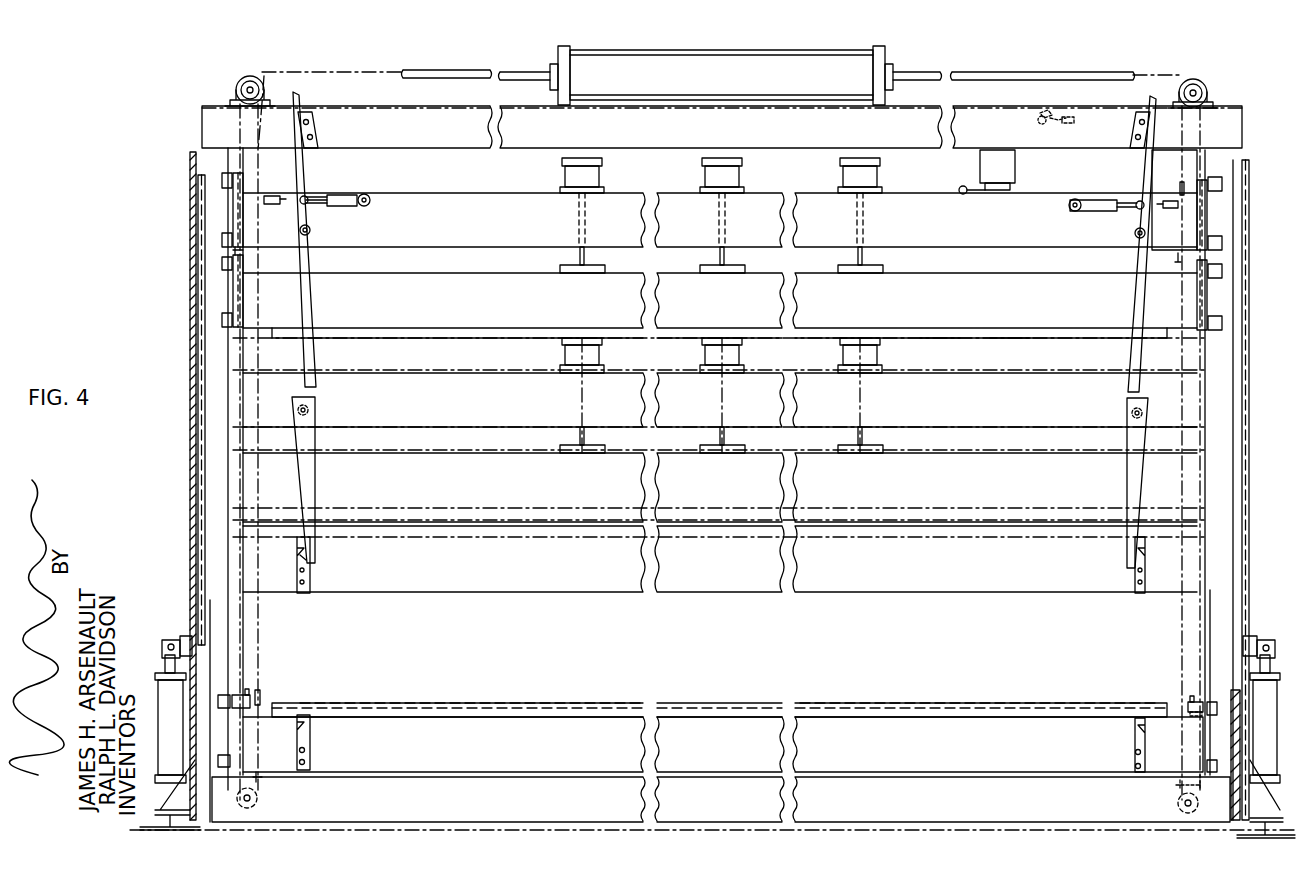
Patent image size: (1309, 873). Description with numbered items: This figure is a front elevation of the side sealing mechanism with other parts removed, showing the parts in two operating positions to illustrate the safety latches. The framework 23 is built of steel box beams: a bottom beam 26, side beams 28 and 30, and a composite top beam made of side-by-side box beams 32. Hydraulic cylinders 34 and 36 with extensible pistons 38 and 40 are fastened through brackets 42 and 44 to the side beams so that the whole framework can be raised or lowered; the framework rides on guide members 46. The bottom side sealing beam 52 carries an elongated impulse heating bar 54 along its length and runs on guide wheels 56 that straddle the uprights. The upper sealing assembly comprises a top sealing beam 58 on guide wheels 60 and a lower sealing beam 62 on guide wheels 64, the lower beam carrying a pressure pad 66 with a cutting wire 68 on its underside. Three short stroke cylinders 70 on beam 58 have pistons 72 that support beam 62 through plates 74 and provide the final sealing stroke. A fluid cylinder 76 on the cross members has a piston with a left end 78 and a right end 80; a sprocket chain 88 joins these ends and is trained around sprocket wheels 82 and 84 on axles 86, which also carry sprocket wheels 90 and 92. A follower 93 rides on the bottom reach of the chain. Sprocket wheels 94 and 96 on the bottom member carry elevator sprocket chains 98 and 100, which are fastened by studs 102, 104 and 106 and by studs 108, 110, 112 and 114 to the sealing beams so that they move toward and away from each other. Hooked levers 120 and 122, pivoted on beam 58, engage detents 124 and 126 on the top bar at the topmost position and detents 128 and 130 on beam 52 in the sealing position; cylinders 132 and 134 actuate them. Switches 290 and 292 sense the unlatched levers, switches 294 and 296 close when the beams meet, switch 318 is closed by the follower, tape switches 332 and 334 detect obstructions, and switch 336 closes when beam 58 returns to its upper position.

The framework 23 is at (200, 131).
The bottom beam 26 is at (998, 808).
The side beam 28 is at (1233, 546).
The side beam 30 is at (210, 566).
The box beams 32 is at (926, 141).
The cylinder 34 is at (158, 700).
The cylinder 36 is at (1280, 724).
The piston 38 is at (164, 663).
The piston 40 is at (1274, 660).
The bracket 42 is at (186, 636).
The bracket 44 is at (1248, 640).
The guide post 46 is at (190, 528).
The bottom side sealing beam 52 is at (1003, 570).
The heating bar 54 is at (1066, 706).
The guide wheels 56 is at (224, 699).
The top sealing beam 58 is at (1016, 233).
The guide wheels 60 is at (222, 178).
The lower sealing beam 62 is at (1016, 310).
The guide wheels 64 is at (222, 263).
The pressure pad 66 is at (924, 340).
The cutting wire 68 is at (1008, 340).
The short stroke cylinders 70 is at (562, 175).
The pistons 72 is at (578, 255).
The plate 74 is at (602, 266).
The fluid cylinder 76 is at (756, 60).
The piston end 78 is at (447, 73).
The piston end 80 is at (1006, 76).
The sprocket wheel 82 is at (240, 80).
The sprocket wheel 84 is at (1200, 84).
The axles 86 is at (246, 90).
The sprocket chain 88 is at (332, 73).
The sprocket wheel 90 is at (264, 88).
The sprocket wheel 92 is at (1180, 85).
The follower 93 is at (1038, 123).
The sprocket wheel 94 is at (258, 800).
The sprocket wheel 96 is at (1178, 806).
The elevator sprocket chain 98 is at (238, 342).
The elevator sprocket chain 100 is at (1180, 633).
The fastening stud 102 is at (262, 704).
The stud 104 is at (233, 253).
The stud 106 is at (262, 782).
The stud 108 is at (1192, 714).
The stud 110 is at (1176, 260).
The stud 112 is at (1176, 188).
The stud 114 is at (1178, 786).
The lever 120 is at (306, 171).
The lever 122 is at (1140, 165).
The detent 124 is at (318, 128).
The detent 126 is at (1133, 139).
The detent member 128 is at (312, 576).
The detent member 130 is at (1134, 582).
The cylinder 132 is at (349, 195).
The cylinder 134 is at (1102, 213).
The switch 290 is at (282, 206).
The switch 292 is at (1166, 208).
The switch 294 is at (250, 697).
The switch 296 is at (1188, 705).
The switch 318 is at (1074, 122).
The tape switch 332 is at (885, 704).
The tape switch 334 is at (528, 704).
The switch 336 is at (1005, 184).